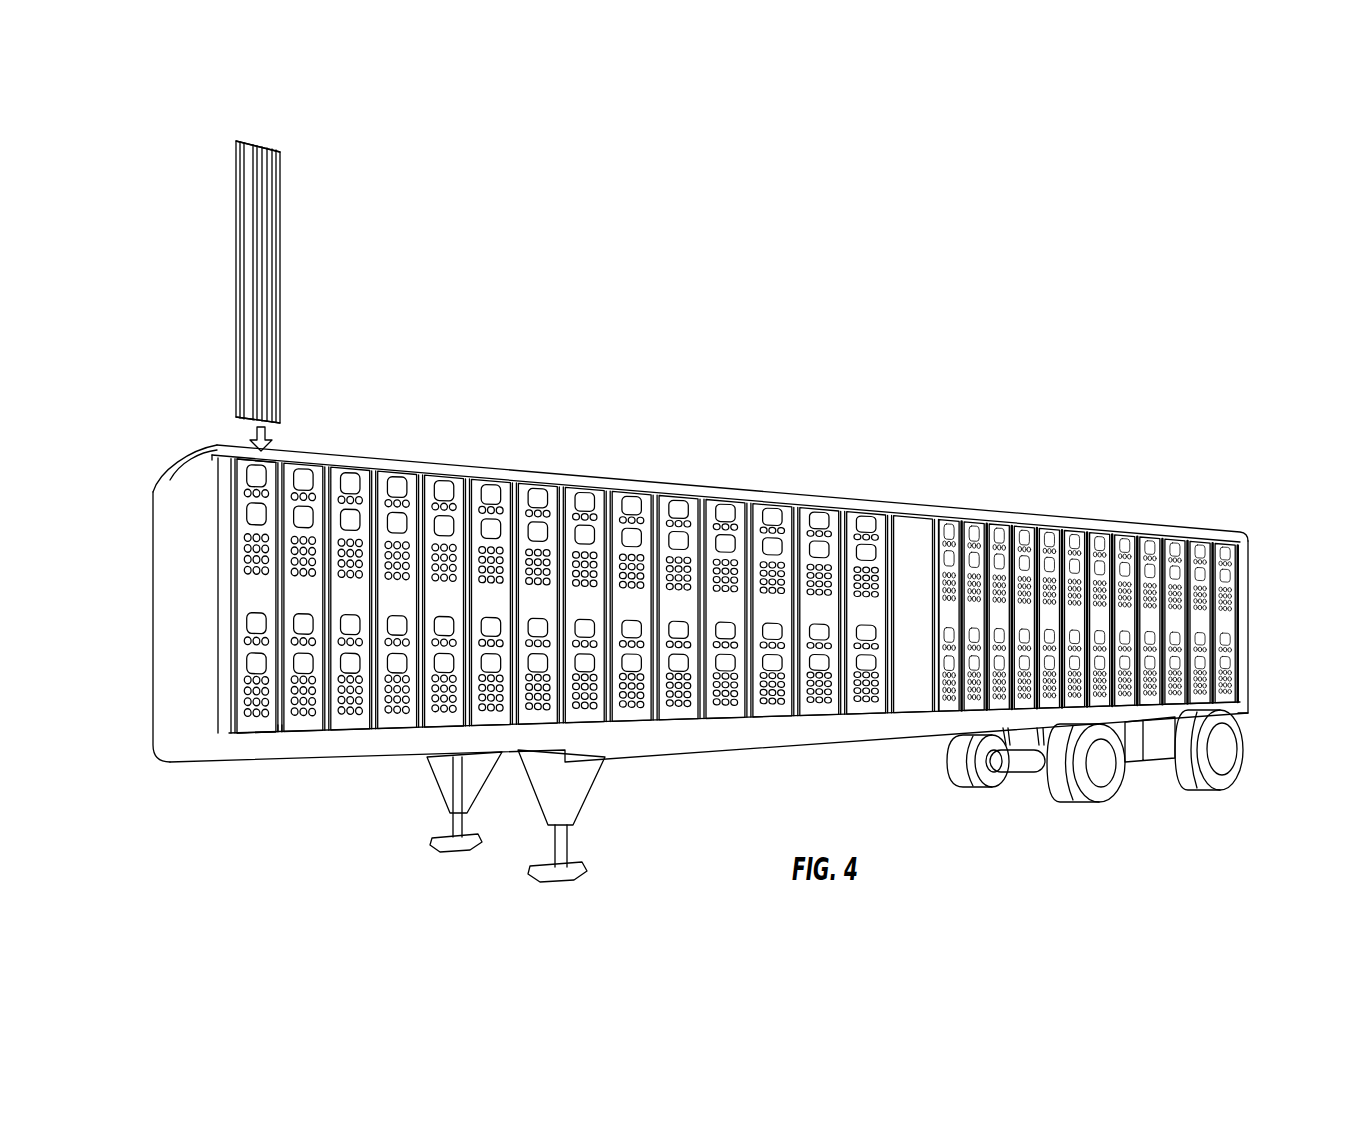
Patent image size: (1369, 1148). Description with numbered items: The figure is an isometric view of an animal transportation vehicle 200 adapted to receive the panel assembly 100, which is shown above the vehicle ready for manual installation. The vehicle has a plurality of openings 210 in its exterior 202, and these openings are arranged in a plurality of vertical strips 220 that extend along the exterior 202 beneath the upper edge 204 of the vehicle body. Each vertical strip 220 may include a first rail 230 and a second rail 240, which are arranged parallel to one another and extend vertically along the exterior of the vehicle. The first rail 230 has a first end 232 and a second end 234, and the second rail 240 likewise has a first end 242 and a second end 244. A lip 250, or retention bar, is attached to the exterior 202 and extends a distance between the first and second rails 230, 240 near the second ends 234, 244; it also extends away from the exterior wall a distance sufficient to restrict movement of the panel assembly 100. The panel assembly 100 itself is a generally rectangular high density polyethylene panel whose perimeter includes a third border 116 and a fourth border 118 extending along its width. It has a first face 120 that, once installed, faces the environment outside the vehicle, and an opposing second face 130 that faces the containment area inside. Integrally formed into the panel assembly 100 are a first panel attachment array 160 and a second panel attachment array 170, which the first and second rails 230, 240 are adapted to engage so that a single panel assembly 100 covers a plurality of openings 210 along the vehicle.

The panel assembly 100 is at (272, 263).
The third border 116 is at (238, 432).
The fourth border 118 is at (258, 144).
The first face 120 is at (262, 349).
The second face 130 is at (233, 213).
The first panel attachment array 160 is at (235, 295).
The second panel attachment array 170 is at (284, 270).
The animal transportation vehicle 200 is at (973, 493).
The exterior 202 is at (1244, 613).
The top rail 204 is at (403, 450).
The openings 210 is at (630, 500).
The vertical strips 220 is at (734, 604).
The first rail 230 is at (235, 540).
The first end 232 is at (222, 446).
The second end 234 is at (237, 735).
The second rail 240 is at (298, 470).
The first end 242 is at (283, 475).
The second end 244 is at (278, 733).
The lip 250 is at (272, 737).